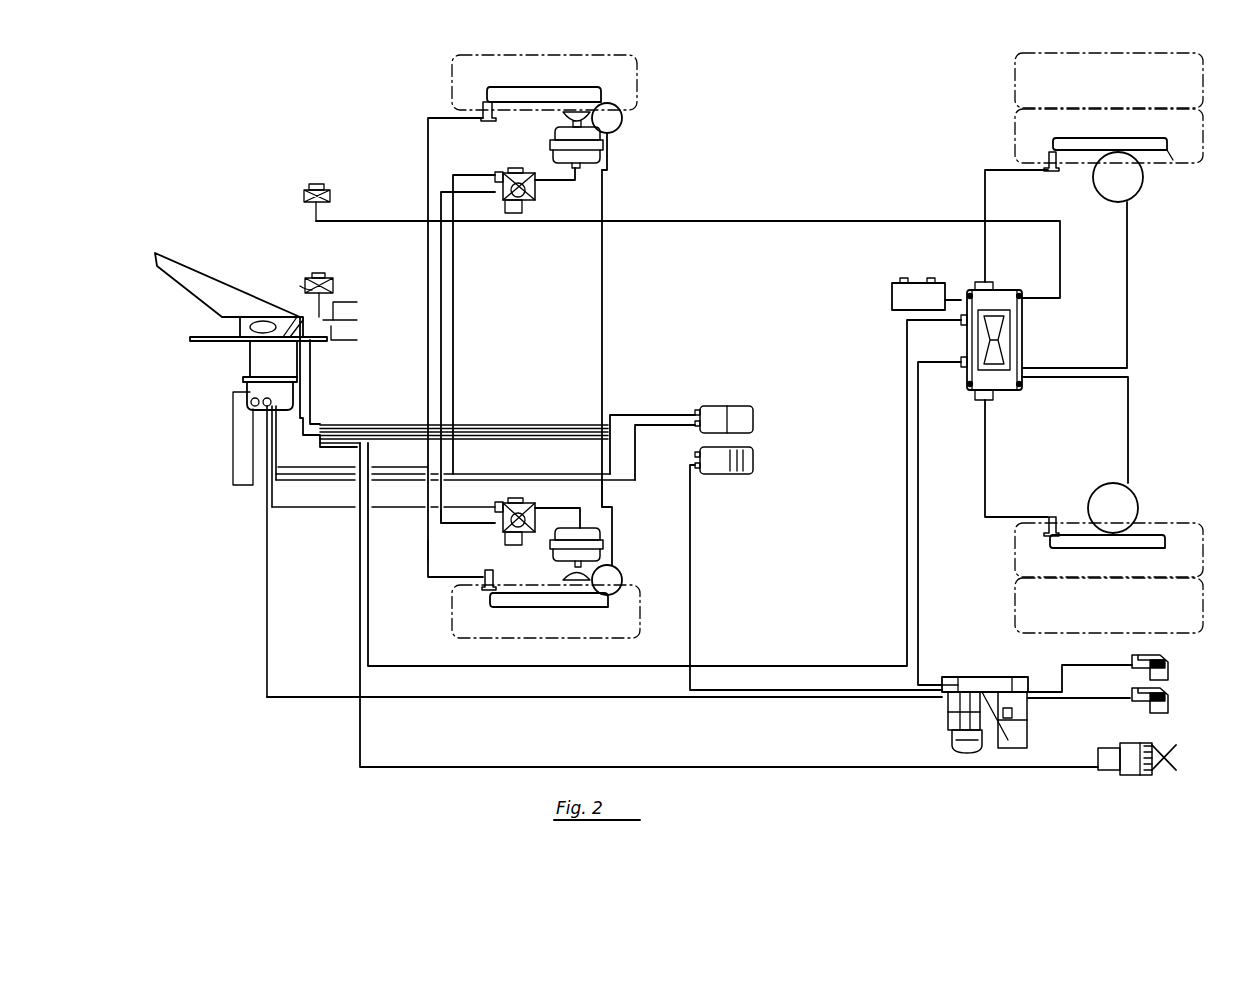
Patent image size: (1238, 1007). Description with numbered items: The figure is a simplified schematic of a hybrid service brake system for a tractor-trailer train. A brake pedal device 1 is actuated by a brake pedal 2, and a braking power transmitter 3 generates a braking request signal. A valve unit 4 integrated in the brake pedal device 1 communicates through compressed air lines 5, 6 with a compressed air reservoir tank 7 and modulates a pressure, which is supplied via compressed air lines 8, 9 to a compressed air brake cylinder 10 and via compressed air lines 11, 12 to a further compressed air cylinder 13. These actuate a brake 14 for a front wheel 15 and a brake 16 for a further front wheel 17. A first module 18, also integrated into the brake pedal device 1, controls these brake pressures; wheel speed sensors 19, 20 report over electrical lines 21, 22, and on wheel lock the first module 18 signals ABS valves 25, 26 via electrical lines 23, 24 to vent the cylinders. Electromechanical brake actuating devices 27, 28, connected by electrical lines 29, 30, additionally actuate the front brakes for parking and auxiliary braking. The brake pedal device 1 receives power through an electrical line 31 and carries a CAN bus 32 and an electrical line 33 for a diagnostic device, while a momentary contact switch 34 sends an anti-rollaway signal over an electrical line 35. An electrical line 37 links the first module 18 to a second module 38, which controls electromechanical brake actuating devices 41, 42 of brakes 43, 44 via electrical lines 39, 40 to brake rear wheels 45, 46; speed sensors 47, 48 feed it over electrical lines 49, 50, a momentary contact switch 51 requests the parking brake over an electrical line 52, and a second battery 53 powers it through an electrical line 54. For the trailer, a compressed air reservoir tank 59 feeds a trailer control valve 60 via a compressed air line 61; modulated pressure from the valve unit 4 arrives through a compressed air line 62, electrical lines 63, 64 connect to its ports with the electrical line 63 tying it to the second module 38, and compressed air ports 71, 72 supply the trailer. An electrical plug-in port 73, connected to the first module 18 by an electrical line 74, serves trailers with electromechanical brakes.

The brake pedal device 1 is at (250, 360).
The brake pedal 2 is at (188, 274).
The braking power transmitter 3 is at (240, 322).
The valve unit 4 is at (290, 407).
The compressed air line 5 is at (614, 415).
The compressed air line 6 is at (635, 458).
The compressed air reservoir tank 7 is at (726, 406).
The compressed air line 8 is at (462, 175).
The compressed air line 9 is at (556, 178).
The compressed air brake cylinder 10 is at (556, 140).
The compressed air line 11 is at (450, 507).
The compressed air line 12 is at (548, 508).
The further compressed air cylinder 13 is at (604, 530).
The brake 14 is at (600, 92).
The front wheel 15 is at (625, 81).
The brake 16 is at (516, 593).
The further front wheel 17 is at (625, 629).
The first module 18 is at (320, 418).
The wheel speed sensor 19 is at (492, 118).
The wheel speed sensor 20 is at (492, 570).
The electrical line 21 is at (428, 150).
The electrical line 22 is at (428, 546).
The electrical line 23 is at (490, 192).
The electrical line 24 is at (470, 523).
The ABS valve 25 is at (537, 196).
The ABS valve 26 is at (537, 518).
The electromechanical brake actuating device 27 is at (620, 124).
The electromechanical brake actuating device 28 is at (620, 570).
The electrical line 29 is at (602, 312).
The electrical line 30 is at (605, 510).
The electrical line 31 is at (346, 308).
The CAN bus 32 is at (341, 327).
The electrical line 33 is at (345, 341).
The momentary contact switch 34 is at (332, 276).
The electrical line 35 is at (303, 288).
The electrical line 37 is at (780, 666).
The second module 38 is at (1022, 325).
The electrical line 39 is at (1127, 295).
The electrical line 40 is at (1128, 432).
The electromechanical brake actuating device 41 is at (1143, 180).
The electromechanical brake actuating device 42 is at (1137, 498).
The brake 43 is at (1172, 156).
The brake 44 is at (1158, 535).
The rear wheel 45 is at (1187, 77).
The rear wheel 46 is at (1187, 621).
The speed sensor 47 is at (1057, 171).
The speed sensor 48 is at (1056, 517).
The electrical line 49 is at (985, 200).
The electrical line 50 is at (985, 480).
The momentary contact switch 51 is at (326, 186).
The electrical line 52 is at (748, 221).
The second battery 53 is at (918, 278).
The electrical line 54 is at (950, 300).
The compressed air reservoir tank 59 is at (754, 447).
The trailer control valve 60 is at (950, 677).
The compressed air line 61 is at (690, 540).
The compressed air line 62 is at (284, 696).
The electrical line 63 is at (918, 408).
The electrical line 64 is at (945, 700).
The compressed air port 71 is at (1168, 672).
The compressed air port 72 is at (1168, 704).
The electrical plug-in port 73 is at (1168, 752).
The electrical line 74 is at (728, 767).